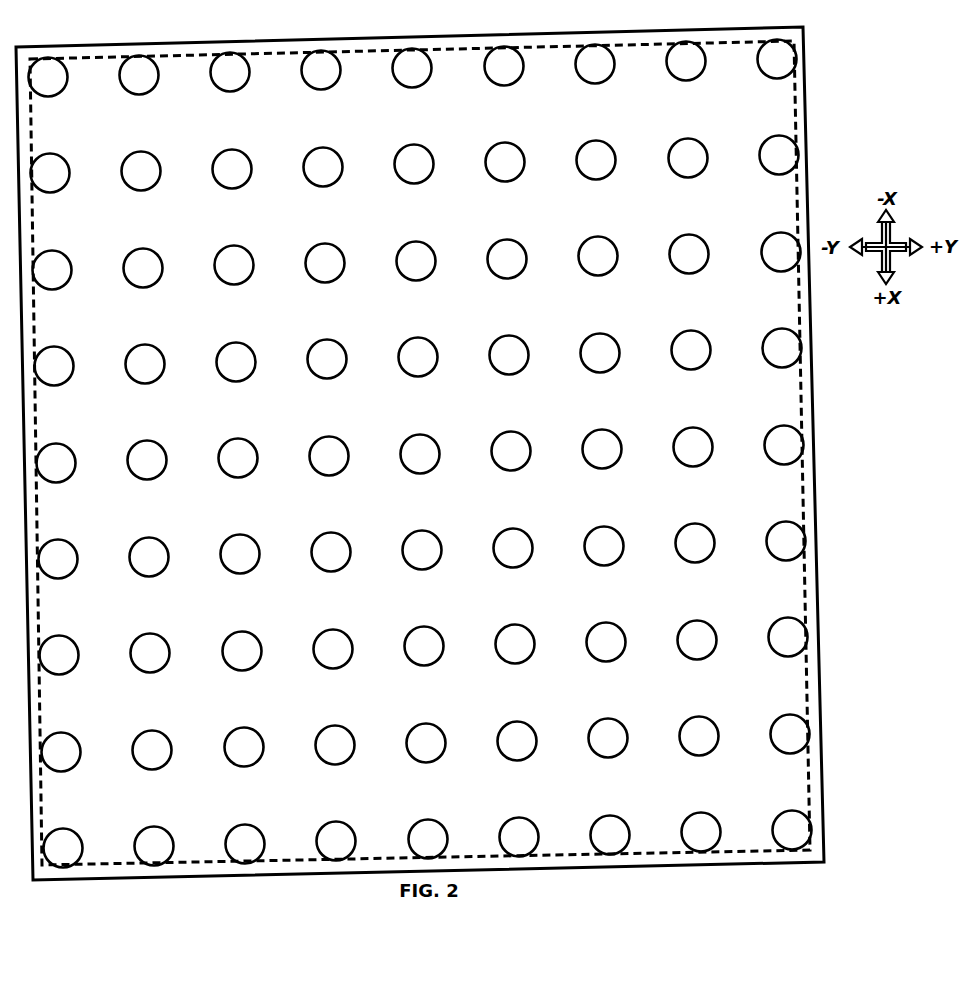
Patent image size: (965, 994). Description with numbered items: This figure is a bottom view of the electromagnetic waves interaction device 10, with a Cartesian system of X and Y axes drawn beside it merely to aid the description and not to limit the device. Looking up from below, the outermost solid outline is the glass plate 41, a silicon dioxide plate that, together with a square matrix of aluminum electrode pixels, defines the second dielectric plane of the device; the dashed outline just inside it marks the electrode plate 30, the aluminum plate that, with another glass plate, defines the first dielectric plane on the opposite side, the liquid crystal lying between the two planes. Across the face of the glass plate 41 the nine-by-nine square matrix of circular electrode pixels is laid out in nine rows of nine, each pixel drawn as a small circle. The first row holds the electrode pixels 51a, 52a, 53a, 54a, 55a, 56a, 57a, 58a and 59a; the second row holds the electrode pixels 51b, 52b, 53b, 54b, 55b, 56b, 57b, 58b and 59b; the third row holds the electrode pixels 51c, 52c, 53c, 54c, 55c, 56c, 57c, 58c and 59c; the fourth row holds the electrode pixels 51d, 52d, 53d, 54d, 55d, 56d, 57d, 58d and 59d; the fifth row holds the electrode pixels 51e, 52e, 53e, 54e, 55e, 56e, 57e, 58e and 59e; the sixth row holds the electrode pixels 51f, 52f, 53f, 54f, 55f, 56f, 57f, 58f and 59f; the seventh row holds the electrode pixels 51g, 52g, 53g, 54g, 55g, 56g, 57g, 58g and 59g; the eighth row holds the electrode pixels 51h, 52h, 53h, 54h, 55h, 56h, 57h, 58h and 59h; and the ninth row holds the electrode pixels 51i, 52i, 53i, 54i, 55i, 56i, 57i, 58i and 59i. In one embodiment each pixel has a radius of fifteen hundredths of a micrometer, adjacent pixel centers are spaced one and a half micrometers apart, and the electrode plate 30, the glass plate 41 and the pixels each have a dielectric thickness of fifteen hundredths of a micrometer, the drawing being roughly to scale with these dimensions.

The electromagnetic waves interaction device 10 is at (858, 447).
The electrode plate 30 is at (805, 137).
The glass plate 41 is at (808, 102).
The electrode pixel 51a is at (42, 74).
The electrode pixel 52a is at (133, 72).
The electrode pixel 53a is at (224, 70).
The electrode pixel 54a is at (315, 67).
The electrode pixel 55a is at (406, 65).
The electrode pixel 56a is at (498, 63).
The electrode pixel 57a is at (589, 60).
The electrode pixel 58a is at (680, 58).
The electrode pixel 59a is at (783, 56).
The electrode pixel 51b is at (44, 176).
The electrode pixel 52b is at (135, 174).
The electrode pixel 53b is at (226, 172).
The electrode pixel 54b is at (317, 170).
The electrode pixel 55b is at (408, 167).
The electrode pixel 56b is at (499, 165).
The electrode pixel 57b is at (590, 163).
The electrode pixel 58b is at (682, 161).
The electrode pixel 59b is at (785, 158).
The electrode pixel 51c is at (46, 273).
The electrode pixel 52c is at (137, 271).
The electrode pixel 53c is at (228, 268).
The electrode pixel 54c is at (319, 266).
The electrode pixel 55c is at (410, 264).
The electrode pixel 56c is at (501, 262).
The electrode pixel 57c is at (592, 259).
The electrode pixel 58c is at (683, 257).
The electrode pixel 59c is at (787, 255).
The electrode pixel 51d is at (48, 369).
The electrode pixel 52d is at (139, 367).
The electrode pixel 53d is at (230, 365).
The electrode pixel 54d is at (321, 362).
The electrode pixel 55d is at (412, 360).
The electrode pixel 56d is at (503, 358).
The electrode pixel 57d is at (594, 356).
The electrode pixel 58d is at (685, 353).
The electrode pixel 59d is at (788, 351).
The electrode pixel 51e is at (50, 466).
The electrode pixel 52e is at (141, 463).
The electrode pixel 53e is at (232, 461).
The electrode pixel 54e is at (323, 459).
The electrode pixel 55e is at (414, 457).
The electrode pixel 56e is at (505, 454).
The electrode pixel 57e is at (596, 452).
The electrode pixel 58e is at (687, 450).
The electrode pixel 59e is at (790, 448).
The electrode pixel 51f is at (52, 562).
The electrode pixel 52f is at (143, 560).
The electrode pixel 53f is at (234, 558).
The electrode pixel 54f is at (325, 555).
The electrode pixel 55f is at (416, 553).
The electrode pixel 56f is at (507, 551).
The electrode pixel 57f is at (598, 548).
The electrode pixel 58f is at (689, 546).
The electrode pixel 59f is at (792, 544).
The electrode pixel 51g is at (53, 658).
The electrode pixel 52g is at (144, 656).
The electrode pixel 53g is at (236, 654).
The electrode pixel 54g is at (327, 652).
The electrode pixel 55g is at (418, 649).
The electrode pixel 56g is at (509, 647).
The electrode pixel 57g is at (600, 645).
The electrode pixel 58g is at (691, 643).
The electrode pixel 59g is at (794, 640).
The electrode pixel 51h is at (55, 755).
The electrode pixel 52h is at (146, 753).
The electrode pixel 53h is at (238, 750).
The electrode pixel 54h is at (329, 748).
The electrode pixel 55h is at (420, 746).
The electrode pixel 56h is at (511, 744).
The electrode pixel 57h is at (602, 741).
The electrode pixel 58h is at (693, 739).
The electrode pixel 59h is at (796, 737).
The electrode pixel 51i is at (57, 851).
The electrode pixel 52i is at (148, 849).
The electrode pixel 53i is at (239, 847).
The electrode pixel 54i is at (330, 844).
The electrode pixel 55i is at (422, 842).
The electrode pixel 56i is at (513, 840).
The electrode pixel 57i is at (604, 838).
The electrode pixel 58i is at (695, 835).
The electrode pixel 59i is at (798, 833).